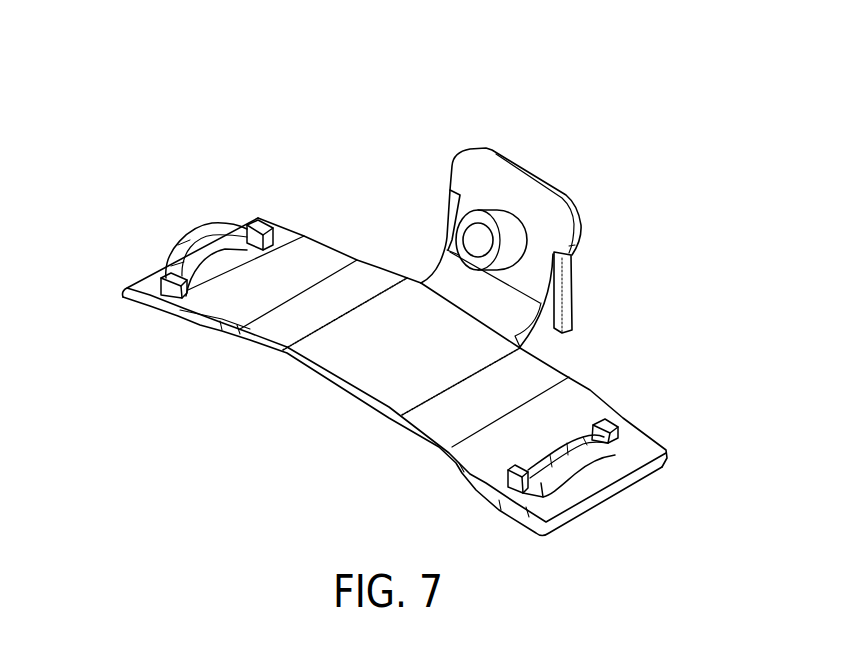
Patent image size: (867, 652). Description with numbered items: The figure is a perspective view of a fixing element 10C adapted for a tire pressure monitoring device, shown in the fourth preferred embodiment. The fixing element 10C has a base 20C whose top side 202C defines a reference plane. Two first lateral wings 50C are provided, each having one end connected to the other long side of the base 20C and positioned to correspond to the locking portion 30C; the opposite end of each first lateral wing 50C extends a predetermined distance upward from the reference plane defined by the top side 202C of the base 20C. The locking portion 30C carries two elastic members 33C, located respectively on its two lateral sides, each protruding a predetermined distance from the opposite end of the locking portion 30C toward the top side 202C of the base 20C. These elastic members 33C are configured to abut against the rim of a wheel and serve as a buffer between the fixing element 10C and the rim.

The fixing element 10C is at (255, 103).
The base 20C is at (666, 446).
The top side 202C is at (358, 370).
The locking portion 30C is at (570, 192).
The elastic members 33C is at (444, 208).
The first lateral wings 50C is at (132, 299).